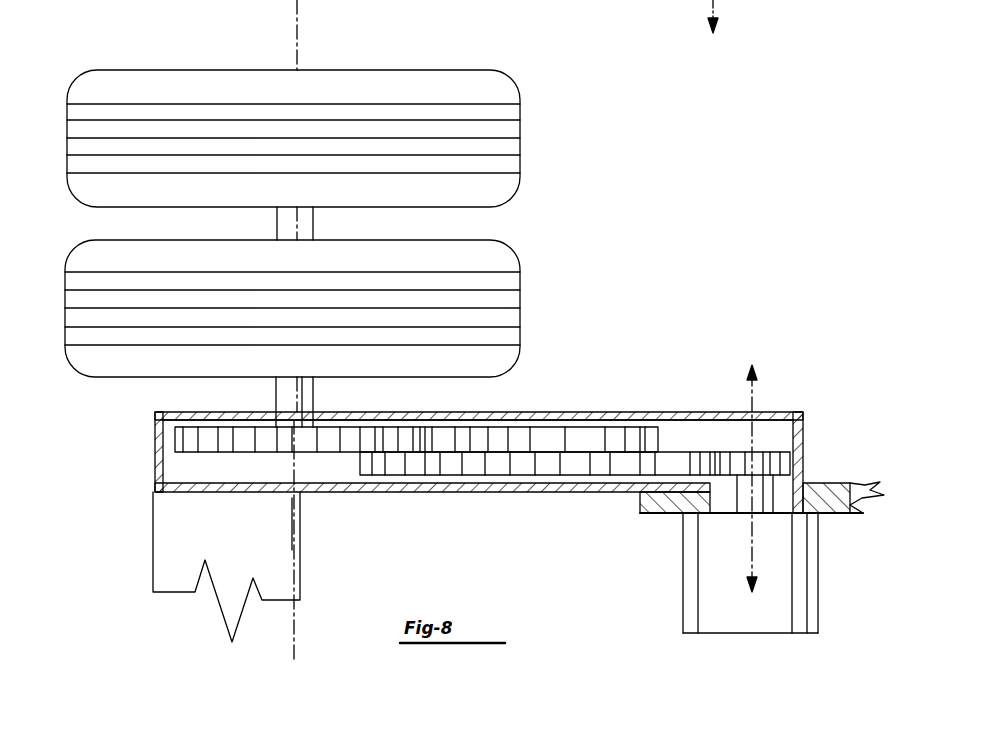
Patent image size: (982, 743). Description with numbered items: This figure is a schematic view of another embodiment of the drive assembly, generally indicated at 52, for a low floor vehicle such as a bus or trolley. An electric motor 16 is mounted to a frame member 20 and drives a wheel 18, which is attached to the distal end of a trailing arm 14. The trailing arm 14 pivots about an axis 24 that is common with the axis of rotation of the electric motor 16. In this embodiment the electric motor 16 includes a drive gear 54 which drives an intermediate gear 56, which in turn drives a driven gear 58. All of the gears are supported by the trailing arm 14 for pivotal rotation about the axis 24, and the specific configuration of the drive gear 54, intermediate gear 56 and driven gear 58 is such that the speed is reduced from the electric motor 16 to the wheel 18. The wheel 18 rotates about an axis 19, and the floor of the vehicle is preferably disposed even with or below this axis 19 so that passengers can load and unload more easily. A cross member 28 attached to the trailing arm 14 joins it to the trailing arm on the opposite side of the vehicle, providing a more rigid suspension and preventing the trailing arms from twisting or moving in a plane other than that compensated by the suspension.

The axis 19 is at (297, 23).
The wheel 18 is at (485, 143).
The trailing arm 14 is at (803, 410).
The driven gear 58 is at (248, 438).
The intermediate gear 56 is at (450, 462).
The drive gear 54 is at (775, 460).
The axis 24 is at (750, 400).
The electric motor 16 is at (713, 553).
The frame member 20 is at (830, 493).
The cross member 28 is at (170, 535).
The drive assembly 52 is at (783, 308).